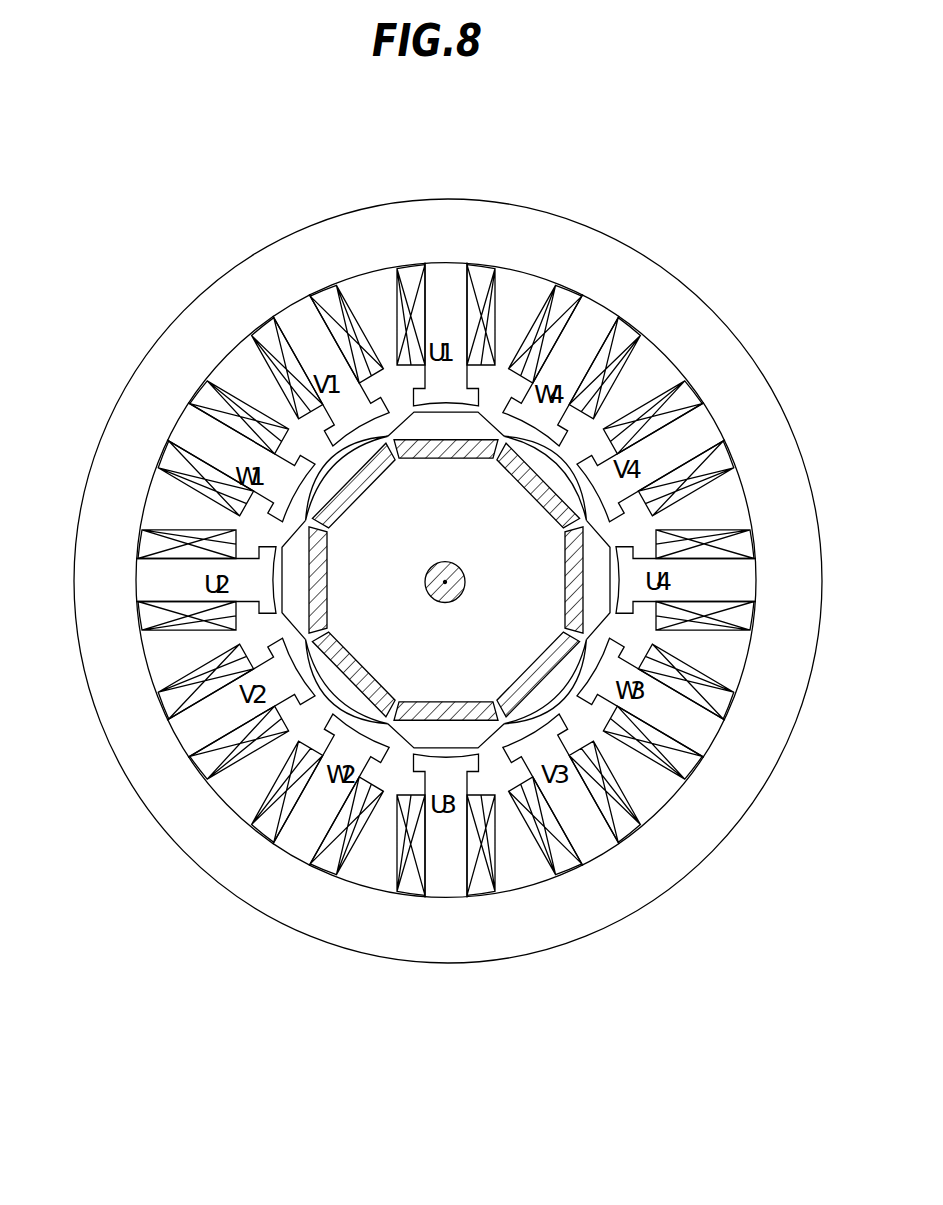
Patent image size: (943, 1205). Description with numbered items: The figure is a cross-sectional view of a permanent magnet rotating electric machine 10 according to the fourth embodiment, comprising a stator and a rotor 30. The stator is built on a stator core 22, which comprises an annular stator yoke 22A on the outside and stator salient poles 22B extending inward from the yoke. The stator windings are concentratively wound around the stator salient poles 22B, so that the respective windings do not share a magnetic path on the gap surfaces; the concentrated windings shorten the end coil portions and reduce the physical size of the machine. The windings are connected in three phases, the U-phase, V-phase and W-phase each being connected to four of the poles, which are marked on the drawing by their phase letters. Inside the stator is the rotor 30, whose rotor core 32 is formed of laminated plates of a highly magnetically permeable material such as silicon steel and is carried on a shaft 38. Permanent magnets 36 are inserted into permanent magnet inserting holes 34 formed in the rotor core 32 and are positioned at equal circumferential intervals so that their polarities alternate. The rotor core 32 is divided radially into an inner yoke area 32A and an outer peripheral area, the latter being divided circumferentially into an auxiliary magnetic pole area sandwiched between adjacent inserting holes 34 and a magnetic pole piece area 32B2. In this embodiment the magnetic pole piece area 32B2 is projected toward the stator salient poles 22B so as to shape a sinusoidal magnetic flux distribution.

The rotating electric machine 10 is at (776, 259).
The stator core 22 is at (446, 580).
The annular stator yoke 22A is at (446, 580).
The stator salient poles 22B is at (446, 580).
The rotor 30 is at (446, 580).
The rotor core 32 is at (446, 580).
The inner yoke area 32A is at (446, 580).
The magnetic pole piece area 32B2 is at (446, 526).
The permanent magnet inserting holes 34 is at (446, 736).
The permanent magnets 36 is at (446, 580).
The shaft 38 is at (445, 582).